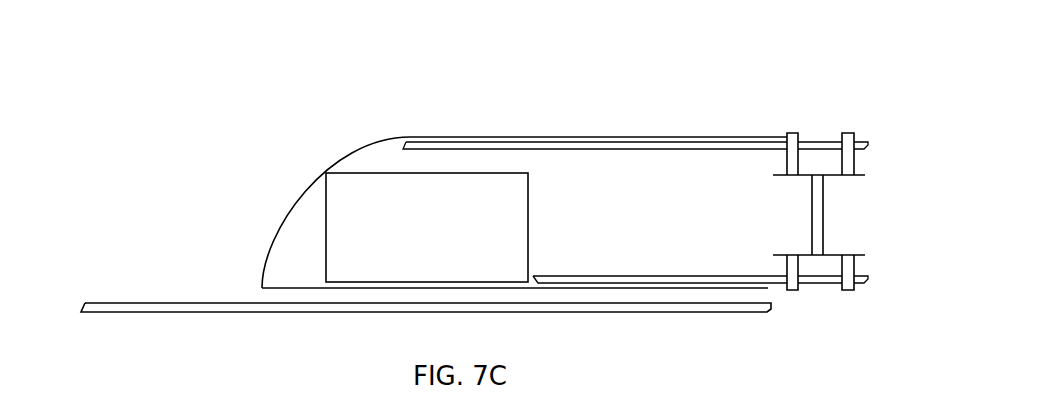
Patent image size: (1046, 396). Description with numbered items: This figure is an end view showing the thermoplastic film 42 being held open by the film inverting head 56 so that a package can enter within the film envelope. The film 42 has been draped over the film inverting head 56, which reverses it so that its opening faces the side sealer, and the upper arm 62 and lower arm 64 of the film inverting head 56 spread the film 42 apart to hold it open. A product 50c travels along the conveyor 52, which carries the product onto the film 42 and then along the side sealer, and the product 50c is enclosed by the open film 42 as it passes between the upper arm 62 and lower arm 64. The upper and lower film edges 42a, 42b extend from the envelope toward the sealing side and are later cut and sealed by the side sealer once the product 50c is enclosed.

The thermoplastic film 42 is at (296, 201).
The upper film edge 42a is at (767, 137).
The lower film edge 42b is at (738, 288).
The product 50c is at (529, 197).
The conveyor 52 is at (117, 312).
The film inverting head 56 is at (823, 235).
The upper arm 62 is at (624, 142).
The lower arm 64 is at (727, 276).